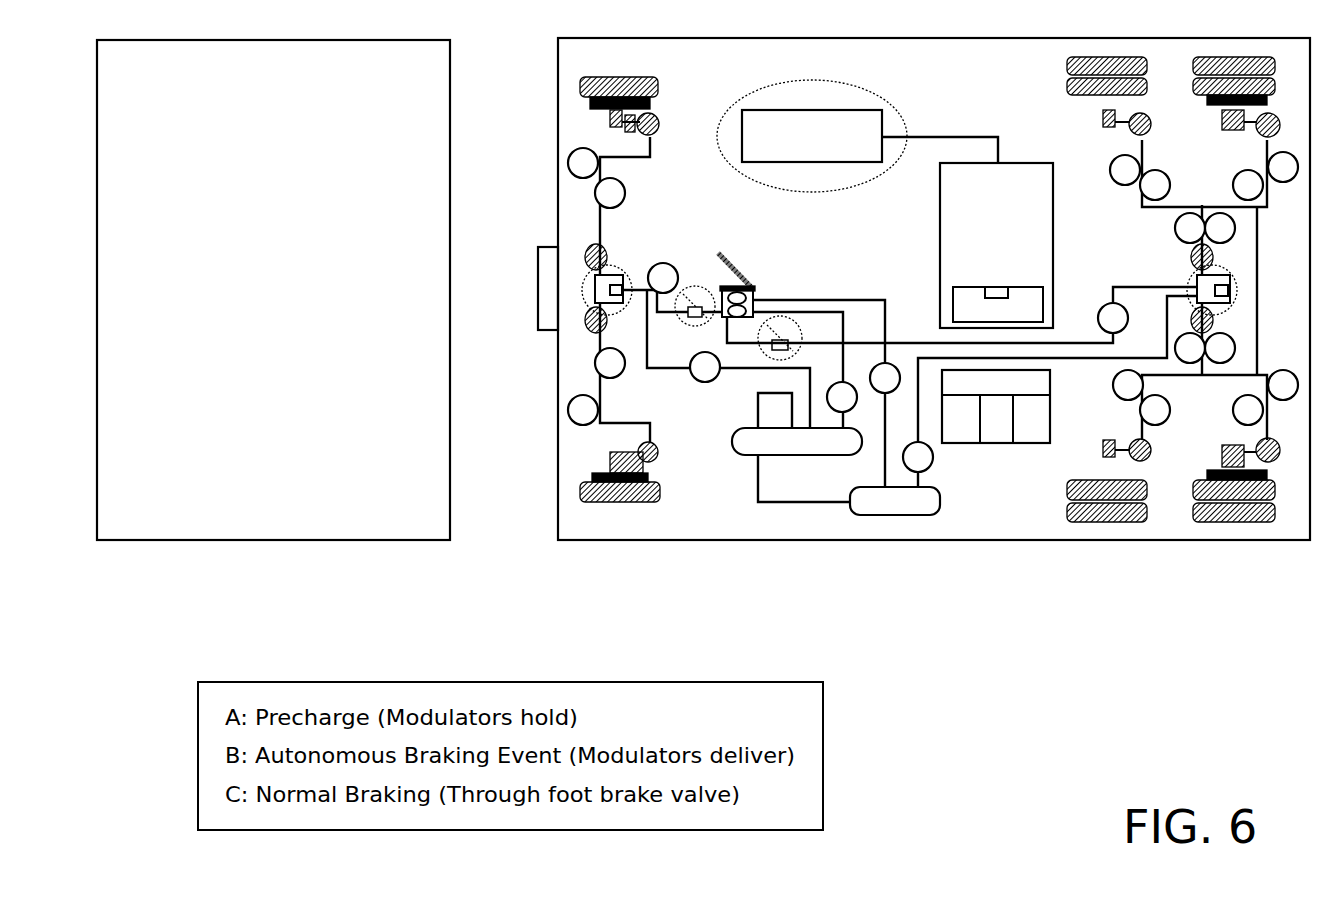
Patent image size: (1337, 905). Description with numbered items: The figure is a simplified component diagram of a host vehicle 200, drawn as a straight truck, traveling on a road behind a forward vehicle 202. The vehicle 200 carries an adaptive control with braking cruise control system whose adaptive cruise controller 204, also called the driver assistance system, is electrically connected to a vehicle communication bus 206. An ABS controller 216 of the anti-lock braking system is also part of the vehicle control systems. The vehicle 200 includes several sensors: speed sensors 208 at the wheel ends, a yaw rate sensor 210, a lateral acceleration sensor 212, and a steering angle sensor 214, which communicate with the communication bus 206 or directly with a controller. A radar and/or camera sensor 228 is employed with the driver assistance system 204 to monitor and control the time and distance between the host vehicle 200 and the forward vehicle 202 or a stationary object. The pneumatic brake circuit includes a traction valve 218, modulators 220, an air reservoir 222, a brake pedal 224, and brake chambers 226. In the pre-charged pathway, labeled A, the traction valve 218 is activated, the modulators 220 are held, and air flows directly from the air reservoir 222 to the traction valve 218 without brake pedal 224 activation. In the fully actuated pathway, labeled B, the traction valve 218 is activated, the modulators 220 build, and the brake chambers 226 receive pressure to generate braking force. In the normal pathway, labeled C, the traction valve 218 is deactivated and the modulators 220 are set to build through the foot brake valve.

The vehicle 200 is at (930, 38).
The forward vehicle 202 is at (378, 38).
The adaptive cruise controller 204 is at (1013, 163).
The vehicle communication bus 206 is at (950, 137).
The speed sensors 208 is at (600, 108).
The yaw rate sensor 210 is at (960, 443).
The lateral acceleration sensor 212 is at (993, 435).
The steering angle sensor 214 is at (1037, 424).
The ABS controller 216 is at (870, 115).
The traction valve 218 is at (613, 278).
The modulators 220 is at (600, 245).
The air reservoir 222 is at (745, 437).
The brake pedal 224 is at (754, 262).
The brake chambers 226 is at (652, 120).
The radar and/or camera sensor 228 is at (540, 262).